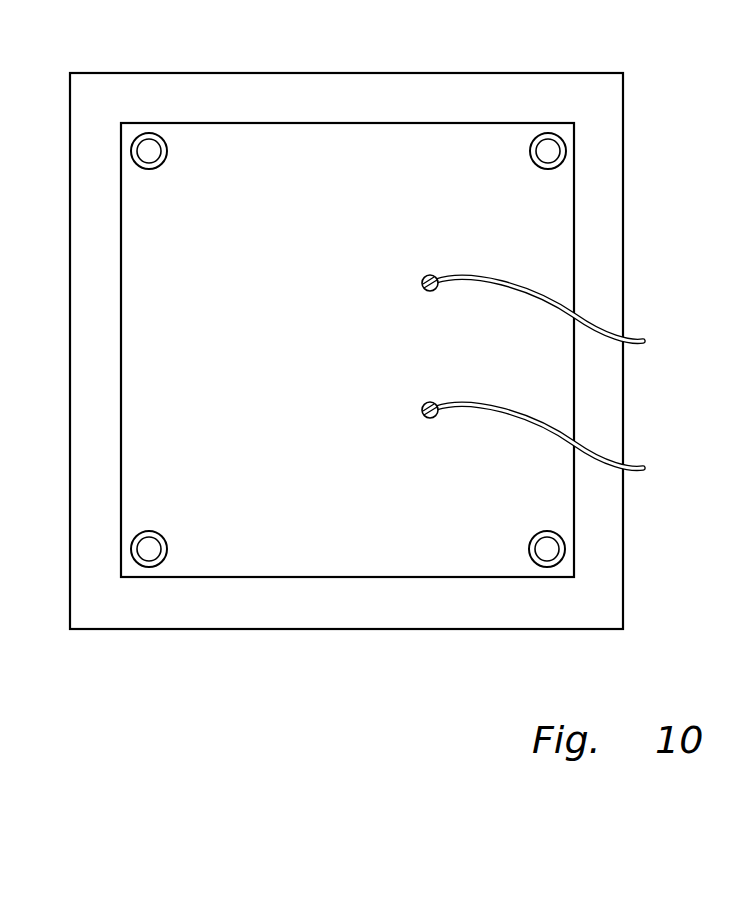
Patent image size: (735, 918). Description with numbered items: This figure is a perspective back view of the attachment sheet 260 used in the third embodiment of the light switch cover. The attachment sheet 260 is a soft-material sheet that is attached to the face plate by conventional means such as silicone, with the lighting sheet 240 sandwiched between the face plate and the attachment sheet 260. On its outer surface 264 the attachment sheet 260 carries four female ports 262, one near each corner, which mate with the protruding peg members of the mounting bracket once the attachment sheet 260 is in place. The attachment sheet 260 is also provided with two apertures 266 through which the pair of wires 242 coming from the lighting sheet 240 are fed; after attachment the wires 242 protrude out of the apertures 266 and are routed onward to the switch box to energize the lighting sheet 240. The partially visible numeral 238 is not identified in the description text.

The frame 238 is at (12, 350).
The lighting sheet 240 is at (351, 351).
The wires 242 is at (602, 327).
The attachment sheet 260 is at (317, 343).
The female ports 262 is at (131, 146).
The outer surface 264 is at (153, 366).
The apertures 266 is at (431, 273).